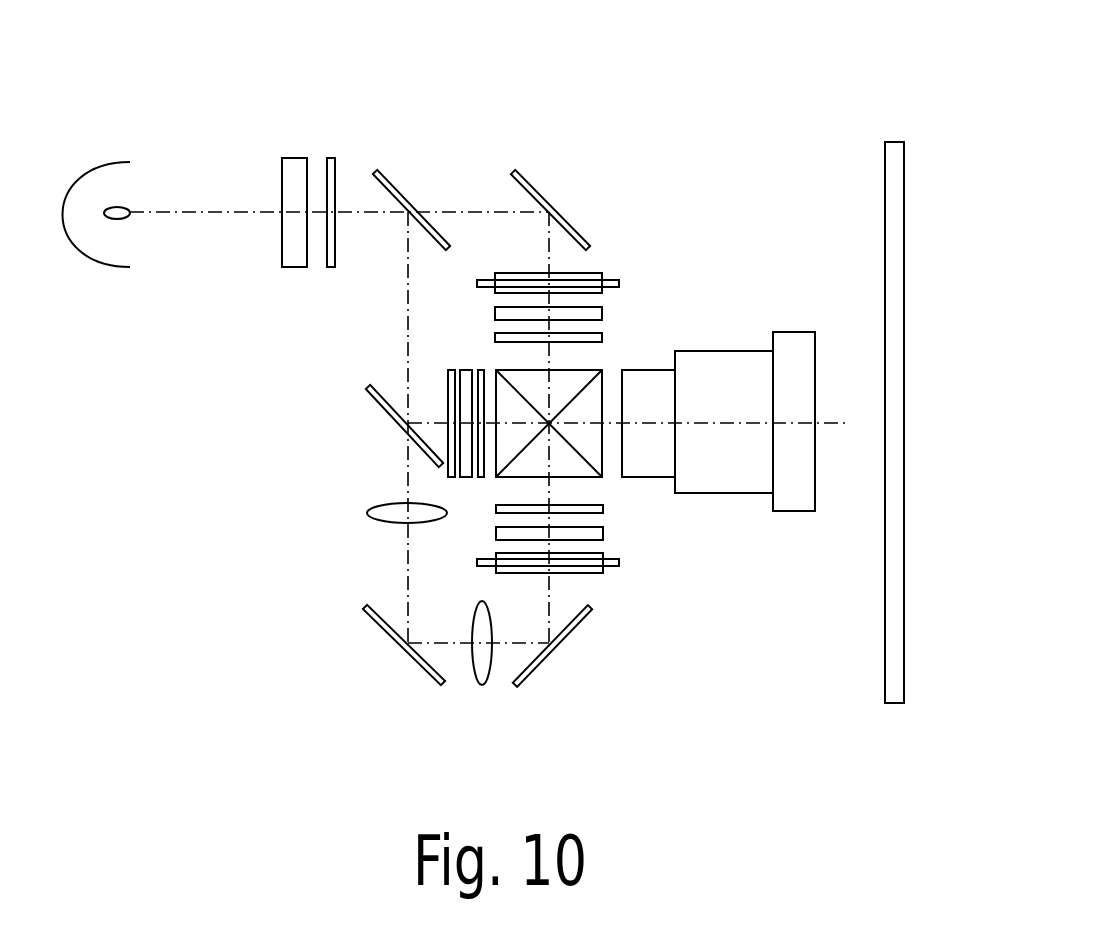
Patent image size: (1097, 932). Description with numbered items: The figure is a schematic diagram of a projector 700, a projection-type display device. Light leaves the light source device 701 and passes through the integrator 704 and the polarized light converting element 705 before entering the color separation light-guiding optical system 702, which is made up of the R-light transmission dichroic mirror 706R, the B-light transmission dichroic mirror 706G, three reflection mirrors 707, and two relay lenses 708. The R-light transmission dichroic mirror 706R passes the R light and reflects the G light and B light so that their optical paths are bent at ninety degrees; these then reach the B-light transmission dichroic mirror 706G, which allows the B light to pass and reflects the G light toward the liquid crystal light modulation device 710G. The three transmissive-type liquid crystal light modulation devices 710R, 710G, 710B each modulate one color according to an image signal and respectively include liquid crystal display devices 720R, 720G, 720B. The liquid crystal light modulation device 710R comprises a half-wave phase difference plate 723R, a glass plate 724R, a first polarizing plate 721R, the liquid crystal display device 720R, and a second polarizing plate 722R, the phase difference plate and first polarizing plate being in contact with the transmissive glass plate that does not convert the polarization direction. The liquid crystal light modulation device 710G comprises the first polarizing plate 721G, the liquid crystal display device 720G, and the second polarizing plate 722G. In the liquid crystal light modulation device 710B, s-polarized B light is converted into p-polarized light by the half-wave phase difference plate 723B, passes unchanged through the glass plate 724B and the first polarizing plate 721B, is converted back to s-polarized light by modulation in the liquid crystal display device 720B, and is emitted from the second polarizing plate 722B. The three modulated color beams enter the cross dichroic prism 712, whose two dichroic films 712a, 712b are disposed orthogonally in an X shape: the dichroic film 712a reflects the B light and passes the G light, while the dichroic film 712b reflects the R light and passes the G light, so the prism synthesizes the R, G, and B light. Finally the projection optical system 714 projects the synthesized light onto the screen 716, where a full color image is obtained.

The projector 700 is at (678, 108).
The light source device 701 is at (103, 265).
The color separation light-guiding optical system 702 is at (518, 120).
The integrator 704 is at (295, 158).
The polarized light converting element 705 is at (330, 158).
The R-light transmission dichroic mirror 706R is at (395, 177).
The B-light transmission dichroic mirror 706G is at (375, 403).
The reflection mirror 707 is at (538, 190).
The relay lens 708 is at (368, 512).
The liquid crystal light modulation device 710R is at (655, 255).
The liquid crystal light modulation device 710G is at (337, 499).
The liquid crystal light modulation device 710B is at (655, 591).
The liquid crystal display device 720R is at (603, 313).
The liquid crystal display device 720G is at (466, 477).
The liquid crystal display device 720B is at (603, 533).
The first polarizing plate 721R is at (620, 285).
The first polarizing plate 721G is at (452, 477).
The first polarizing plate 721B is at (619, 563).
The second polarizing plate 722R is at (617, 321).
The second polarizing plate 722G is at (481, 477).
The second polarizing plate 722B is at (603, 509).
The λ/2 phase difference plate 723R is at (595, 272).
The λ/2 phase difference plate 723B is at (619, 615).
The glass plate 724R is at (604, 277).
The glass plate 724B is at (603, 553).
The cross dichroic prism 712 is at (643, 393).
The dichroic film 712a is at (585, 372).
The dichroic film 712b is at (500, 366).
The projection optical system 714 is at (793, 503).
The screen 716 is at (893, 141).